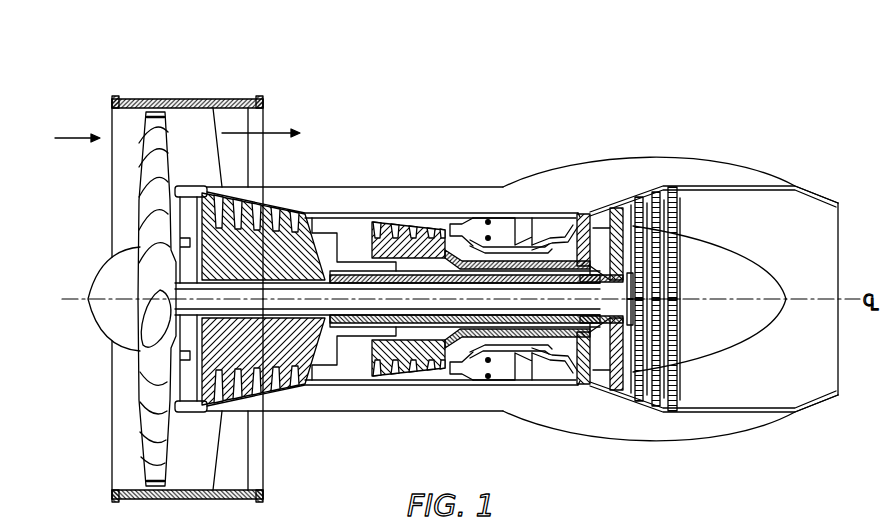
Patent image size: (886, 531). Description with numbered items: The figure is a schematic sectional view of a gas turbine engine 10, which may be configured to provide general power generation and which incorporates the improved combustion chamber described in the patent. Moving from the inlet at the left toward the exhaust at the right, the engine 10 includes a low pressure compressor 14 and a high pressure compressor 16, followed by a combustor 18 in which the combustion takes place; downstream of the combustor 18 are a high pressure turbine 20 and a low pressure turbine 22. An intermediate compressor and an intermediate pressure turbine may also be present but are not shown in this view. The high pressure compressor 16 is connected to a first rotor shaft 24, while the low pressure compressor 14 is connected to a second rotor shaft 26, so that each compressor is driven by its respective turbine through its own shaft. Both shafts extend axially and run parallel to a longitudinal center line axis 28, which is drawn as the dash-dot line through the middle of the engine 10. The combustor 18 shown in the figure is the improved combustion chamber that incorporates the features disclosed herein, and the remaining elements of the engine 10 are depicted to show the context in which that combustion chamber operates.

The gas turbine engine 10 is at (117, 61).
The low pressure compressor 14 is at (262, 235).
The high pressure compressor 16 is at (405, 222).
The combustor 18 is at (500, 230).
The high pressure turbine 20 is at (585, 198).
The low pressure turbine 22 is at (664, 177).
The first rotor shaft 24 is at (502, 332).
The second rotor shaft 26 is at (602, 367).
The longitudinal center line axis 28 is at (818, 299).